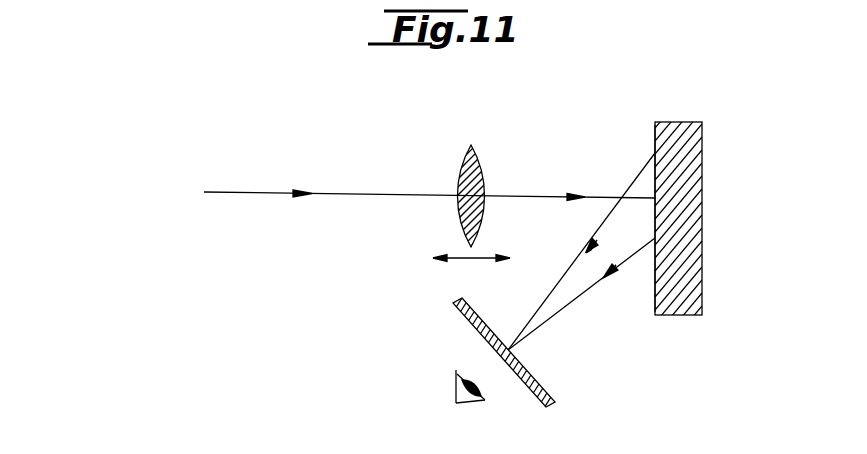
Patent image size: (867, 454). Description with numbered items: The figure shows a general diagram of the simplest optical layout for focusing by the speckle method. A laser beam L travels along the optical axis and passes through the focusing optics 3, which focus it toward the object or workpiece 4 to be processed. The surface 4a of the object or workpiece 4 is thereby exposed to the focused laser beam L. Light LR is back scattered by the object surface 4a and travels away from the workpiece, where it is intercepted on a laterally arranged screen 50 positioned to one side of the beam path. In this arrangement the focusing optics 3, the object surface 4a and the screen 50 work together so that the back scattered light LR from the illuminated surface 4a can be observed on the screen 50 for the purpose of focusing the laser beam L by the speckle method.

The laser beam L is at (352, 192).
The focusing optics 3 is at (478, 160).
The object or workpiece 4 is at (695, 168).
The surface of the object 4a is at (654, 300).
The back scattered light LR is at (560, 308).
The screen 50 is at (536, 378).